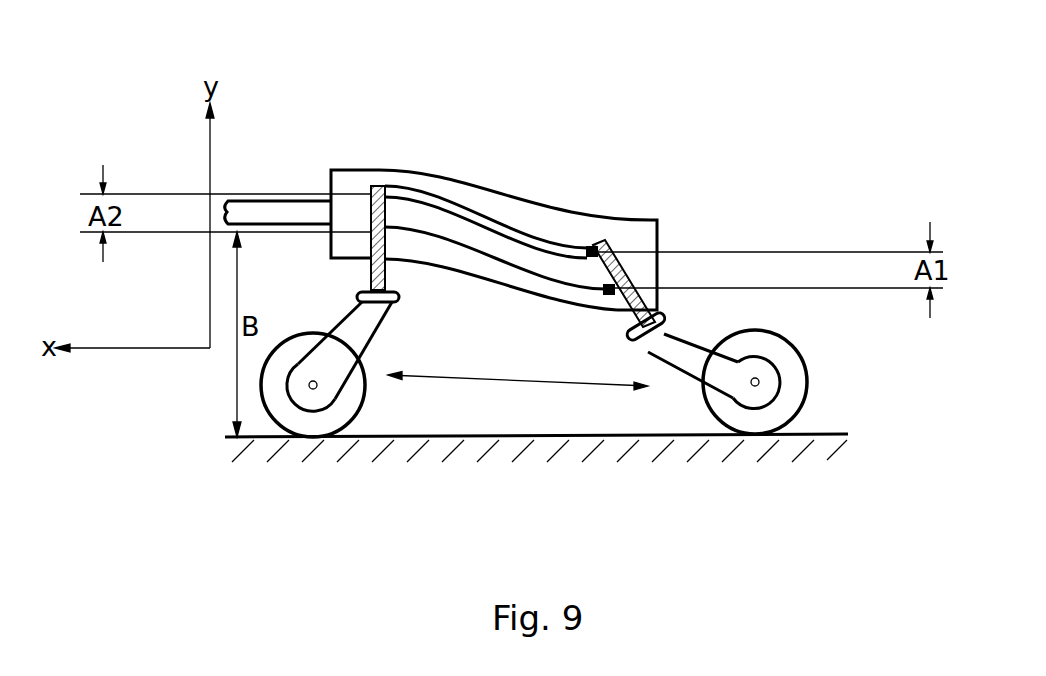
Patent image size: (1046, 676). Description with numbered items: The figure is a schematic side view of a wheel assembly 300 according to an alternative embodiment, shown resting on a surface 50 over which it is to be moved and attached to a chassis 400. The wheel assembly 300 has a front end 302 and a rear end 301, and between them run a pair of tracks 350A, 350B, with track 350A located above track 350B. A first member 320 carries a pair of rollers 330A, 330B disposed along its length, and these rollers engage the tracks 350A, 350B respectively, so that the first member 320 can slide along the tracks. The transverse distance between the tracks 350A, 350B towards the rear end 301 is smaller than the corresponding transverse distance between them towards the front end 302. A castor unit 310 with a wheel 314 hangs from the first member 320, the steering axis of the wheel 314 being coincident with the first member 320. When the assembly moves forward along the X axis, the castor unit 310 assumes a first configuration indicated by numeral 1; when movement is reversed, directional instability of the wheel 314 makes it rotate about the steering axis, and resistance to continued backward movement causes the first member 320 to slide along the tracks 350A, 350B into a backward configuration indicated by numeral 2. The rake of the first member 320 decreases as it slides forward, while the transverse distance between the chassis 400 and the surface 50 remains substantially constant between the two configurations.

The first configuration 1 is at (774, 423).
The backward configuration 2 is at (225, 451).
The surface 50 is at (373, 442).
The wheel assembly 300 is at (637, 87).
The rear end 301 is at (658, 220).
The front end 302 is at (362, 168).
The castor unit 310 is at (688, 405).
The wheel 314 is at (797, 342).
The first member 320 is at (625, 277).
The roller 330A is at (580, 256).
The roller 330B is at (600, 297).
The track 350A is at (480, 196).
The track 350B is at (490, 240).
The chassis 400 is at (295, 200).